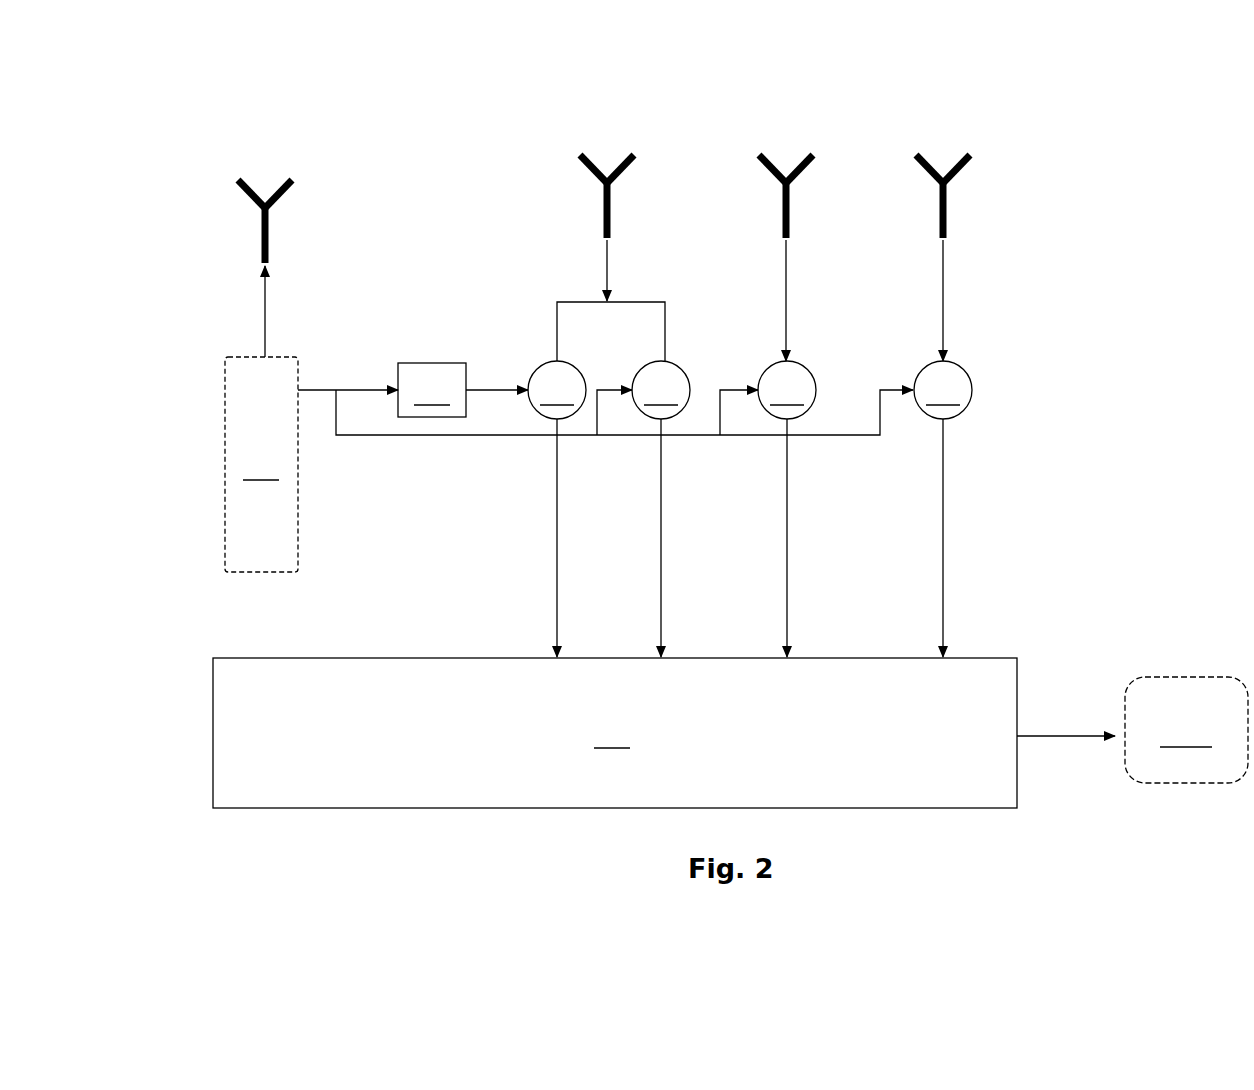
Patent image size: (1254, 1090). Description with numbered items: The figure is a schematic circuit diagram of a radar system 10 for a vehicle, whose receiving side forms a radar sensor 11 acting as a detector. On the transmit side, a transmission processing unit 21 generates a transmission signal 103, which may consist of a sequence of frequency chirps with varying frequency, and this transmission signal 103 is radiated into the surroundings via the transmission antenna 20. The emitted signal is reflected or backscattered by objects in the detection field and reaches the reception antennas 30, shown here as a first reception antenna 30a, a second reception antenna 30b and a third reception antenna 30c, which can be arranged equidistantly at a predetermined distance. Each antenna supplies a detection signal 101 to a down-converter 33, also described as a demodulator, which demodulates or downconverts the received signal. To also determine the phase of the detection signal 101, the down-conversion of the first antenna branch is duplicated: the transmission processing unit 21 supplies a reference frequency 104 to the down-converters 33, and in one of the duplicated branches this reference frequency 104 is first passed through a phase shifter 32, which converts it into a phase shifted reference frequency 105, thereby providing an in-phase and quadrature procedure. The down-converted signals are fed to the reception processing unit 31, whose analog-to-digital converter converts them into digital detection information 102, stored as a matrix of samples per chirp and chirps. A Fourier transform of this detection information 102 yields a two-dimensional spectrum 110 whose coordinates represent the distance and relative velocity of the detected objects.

The radar system 10 is at (178, 122).
The radar sensor 11 is at (1087, 383).
The transmission antenna 20 is at (280, 221).
The transmission processing unit 21 is at (261, 464).
The reception antenna 30 is at (1095, 217).
The first reception antenna 30a is at (629, 196).
The second reception antenna 30b is at (808, 196).
The third reception antenna 30c is at (963, 196).
The reception processing unit 31 is at (615, 613).
The phase shifter 32 is at (432, 390).
The down-converter 33 is at (750, 390).
The detection signal 101 is at (781, 300).
The detection information 102 is at (1066, 717).
The transmission signal 103 is at (294, 311).
The reference frequency 104 is at (605, 418).
The phase shifted reference frequency 105 is at (497, 373).
The spectrum 110 is at (1186, 730).